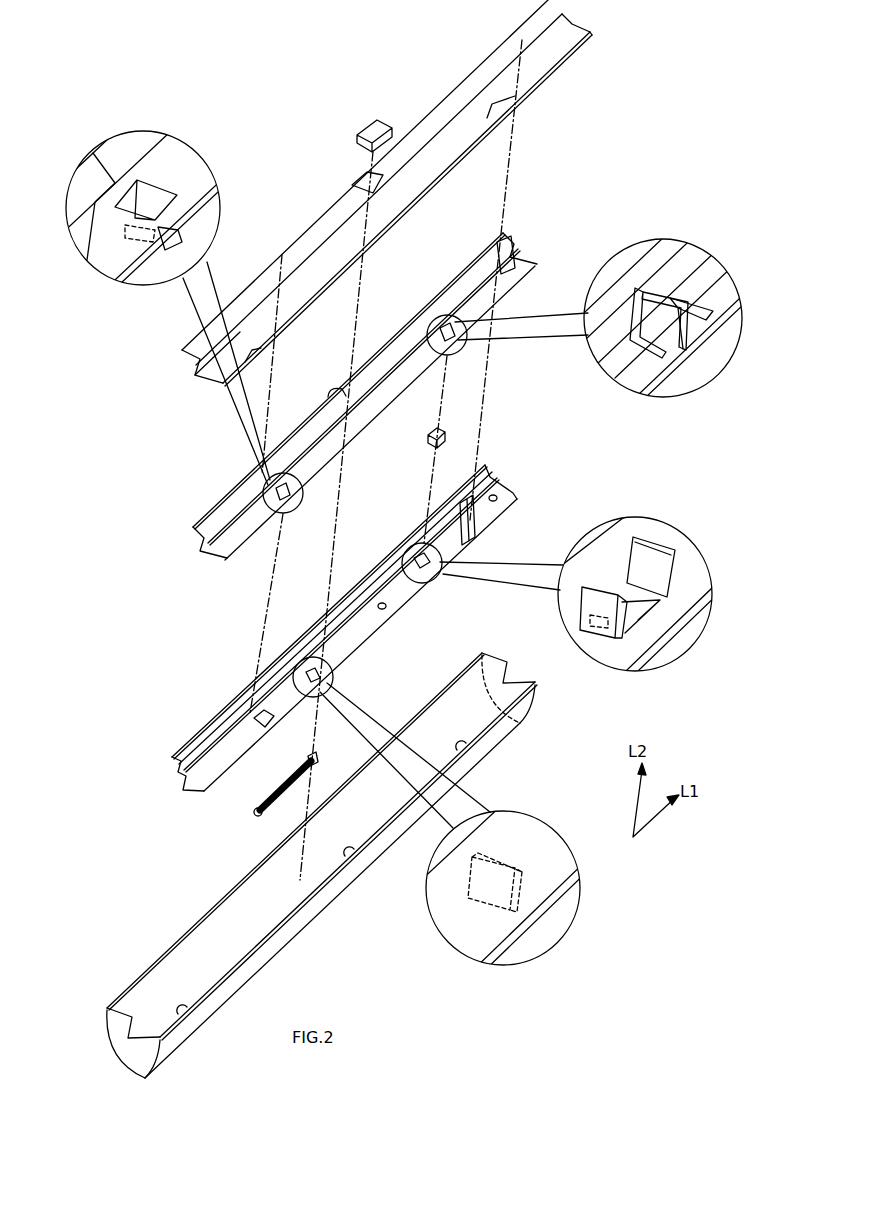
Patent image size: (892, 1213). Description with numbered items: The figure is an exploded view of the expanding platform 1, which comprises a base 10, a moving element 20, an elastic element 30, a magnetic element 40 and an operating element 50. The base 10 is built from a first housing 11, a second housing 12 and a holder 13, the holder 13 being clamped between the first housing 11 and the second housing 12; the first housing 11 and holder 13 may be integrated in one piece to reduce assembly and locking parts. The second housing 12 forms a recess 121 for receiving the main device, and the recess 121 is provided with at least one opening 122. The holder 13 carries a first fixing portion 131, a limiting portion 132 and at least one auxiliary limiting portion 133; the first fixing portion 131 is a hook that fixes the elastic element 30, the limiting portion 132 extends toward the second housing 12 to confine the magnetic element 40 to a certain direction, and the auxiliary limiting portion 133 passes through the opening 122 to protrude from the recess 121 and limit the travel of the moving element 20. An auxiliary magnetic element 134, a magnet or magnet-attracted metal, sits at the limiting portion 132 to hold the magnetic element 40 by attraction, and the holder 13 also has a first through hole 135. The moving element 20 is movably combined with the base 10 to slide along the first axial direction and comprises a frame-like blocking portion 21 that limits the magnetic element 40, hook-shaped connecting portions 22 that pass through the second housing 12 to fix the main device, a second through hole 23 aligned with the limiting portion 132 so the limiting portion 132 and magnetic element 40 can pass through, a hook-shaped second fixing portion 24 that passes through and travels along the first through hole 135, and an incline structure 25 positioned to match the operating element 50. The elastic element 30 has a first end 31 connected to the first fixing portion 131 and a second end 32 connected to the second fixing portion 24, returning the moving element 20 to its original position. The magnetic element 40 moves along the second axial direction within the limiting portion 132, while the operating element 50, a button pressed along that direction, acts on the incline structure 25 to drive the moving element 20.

The expanding platform 1 is at (55, 31).
The base 10 is at (140, 394).
The first housing 11 is at (173, 963).
The second housing 12 is at (190, 381).
The holder 13 is at (176, 752).
The moving element 20 is at (527, 263).
The blocking portion 21 is at (638, 287).
The connecting portion 22 is at (498, 241).
The second through hole 23 is at (692, 320).
The second fixing portion 24 is at (163, 250).
The incline structure 25 is at (347, 389).
The elastic element 30 is at (283, 790).
The first end 31 is at (319, 766).
The second end 32 is at (254, 816).
The magnetic element 40 is at (450, 438).
The operating element 50 is at (373, 128).
The recess 121 is at (572, 48).
The opening 122 is at (513, 112).
The first fixing portion 131 is at (333, 680).
The limiting portion 132 is at (655, 540).
The auxiliary limiting portion 133 is at (484, 519).
The auxiliary magnetic element 134 is at (662, 622).
The first through hole 135 is at (256, 717).